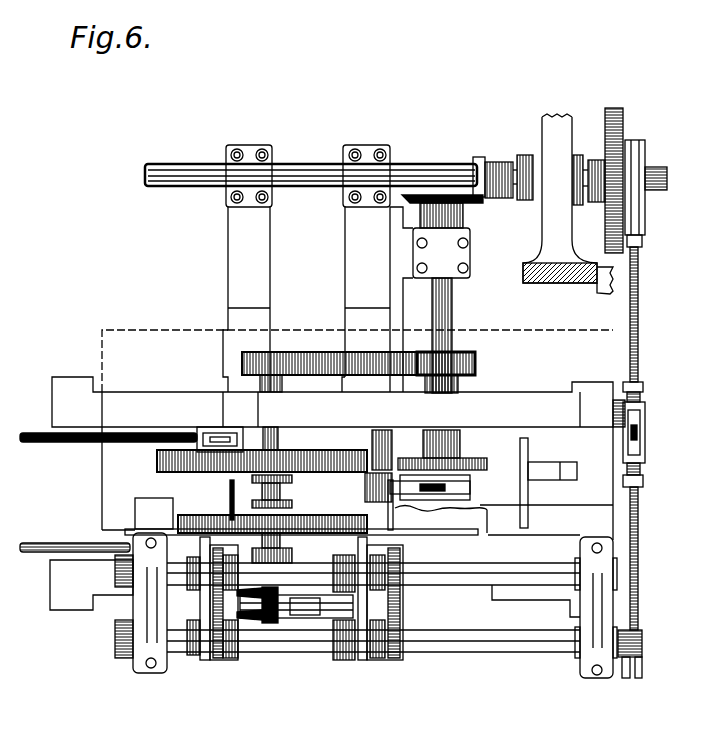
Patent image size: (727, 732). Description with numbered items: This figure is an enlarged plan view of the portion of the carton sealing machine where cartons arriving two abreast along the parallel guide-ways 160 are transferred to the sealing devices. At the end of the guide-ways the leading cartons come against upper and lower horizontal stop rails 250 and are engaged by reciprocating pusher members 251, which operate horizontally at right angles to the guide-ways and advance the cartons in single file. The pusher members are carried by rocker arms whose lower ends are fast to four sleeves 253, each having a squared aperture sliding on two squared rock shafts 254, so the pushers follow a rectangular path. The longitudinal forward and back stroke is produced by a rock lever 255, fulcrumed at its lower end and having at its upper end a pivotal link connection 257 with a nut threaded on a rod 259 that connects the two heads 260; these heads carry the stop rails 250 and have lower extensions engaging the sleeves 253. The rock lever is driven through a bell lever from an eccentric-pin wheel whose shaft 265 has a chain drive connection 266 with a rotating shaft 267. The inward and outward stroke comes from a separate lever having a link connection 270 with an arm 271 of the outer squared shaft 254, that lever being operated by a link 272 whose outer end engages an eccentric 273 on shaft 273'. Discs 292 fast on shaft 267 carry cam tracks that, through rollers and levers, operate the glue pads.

The guide-ways 160 is at (522, 462).
The stop rails 250 is at (148, 527).
The pusher members 251 is at (230, 493).
The sleeves 253 is at (217, 660).
The squared rock shafts 254 is at (458, 578).
The rock lever 255 is at (312, 618).
The pivotal link connection 257 is at (255, 624).
The rod 259 is at (270, 624).
The heads 260 is at (204, 660).
The shaft 265 is at (453, 310).
The chain drive connection 266 is at (312, 352).
The shaft 267 is at (244, 440).
The link connection 270 is at (638, 557).
The arm 271 is at (644, 662).
The link 272 is at (638, 323).
The eccentric 273 is at (638, 179).
The shaft 273' is at (665, 191).
The discs 292 is at (312, 472).